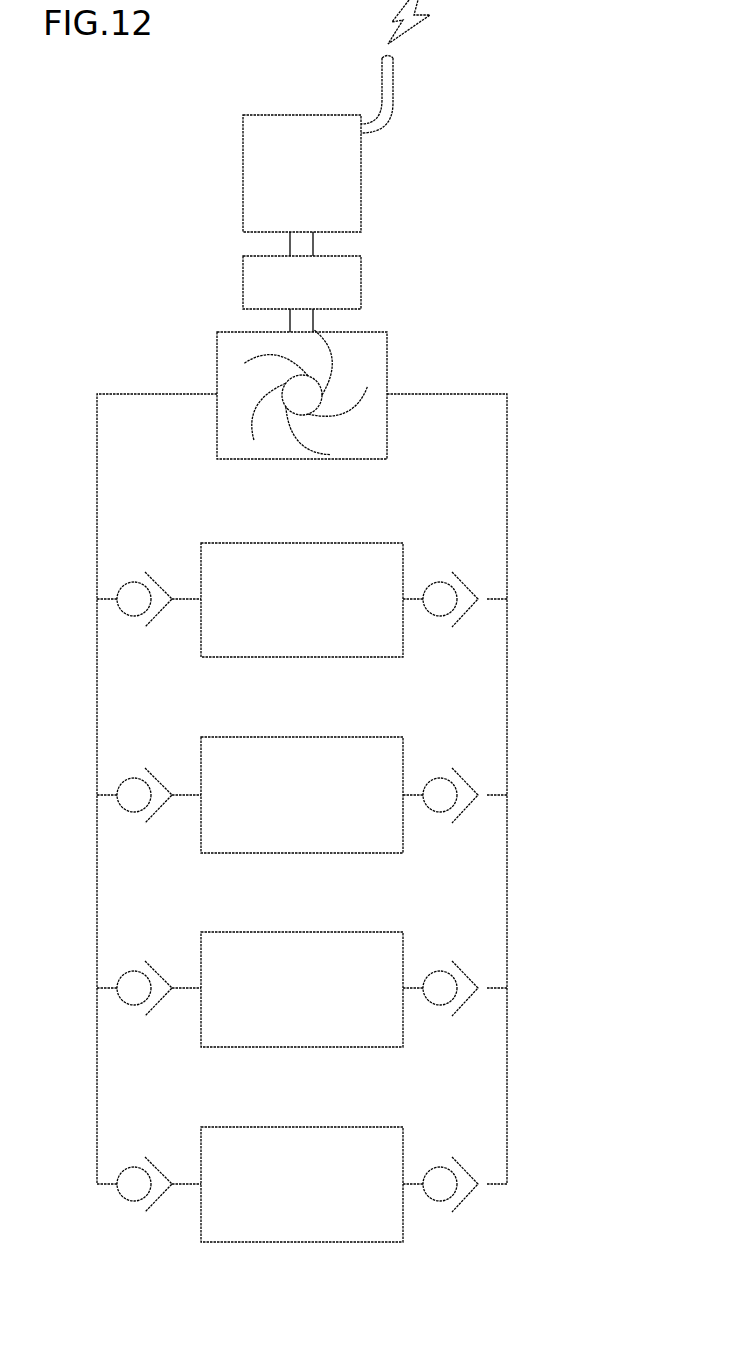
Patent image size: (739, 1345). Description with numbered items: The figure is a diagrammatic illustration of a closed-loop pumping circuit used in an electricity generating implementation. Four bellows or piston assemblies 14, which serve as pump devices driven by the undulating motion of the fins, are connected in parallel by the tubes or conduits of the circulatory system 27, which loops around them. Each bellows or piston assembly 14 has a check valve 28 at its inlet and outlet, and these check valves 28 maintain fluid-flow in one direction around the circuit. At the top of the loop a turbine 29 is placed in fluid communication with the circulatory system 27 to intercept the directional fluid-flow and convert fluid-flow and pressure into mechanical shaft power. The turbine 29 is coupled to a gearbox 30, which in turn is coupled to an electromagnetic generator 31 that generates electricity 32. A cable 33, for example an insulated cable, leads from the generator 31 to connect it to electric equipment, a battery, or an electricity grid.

The bellows or piston assembly 14 is at (276, 613).
The circulatory system 27 is at (509, 697).
The check valves 28 is at (156, 578).
The turbine 29 is at (347, 358).
The gearbox 30 is at (283, 296).
The electromagnetic generator 31 is at (283, 192).
The electricity 32 is at (428, 24).
The cable 33 is at (397, 108).